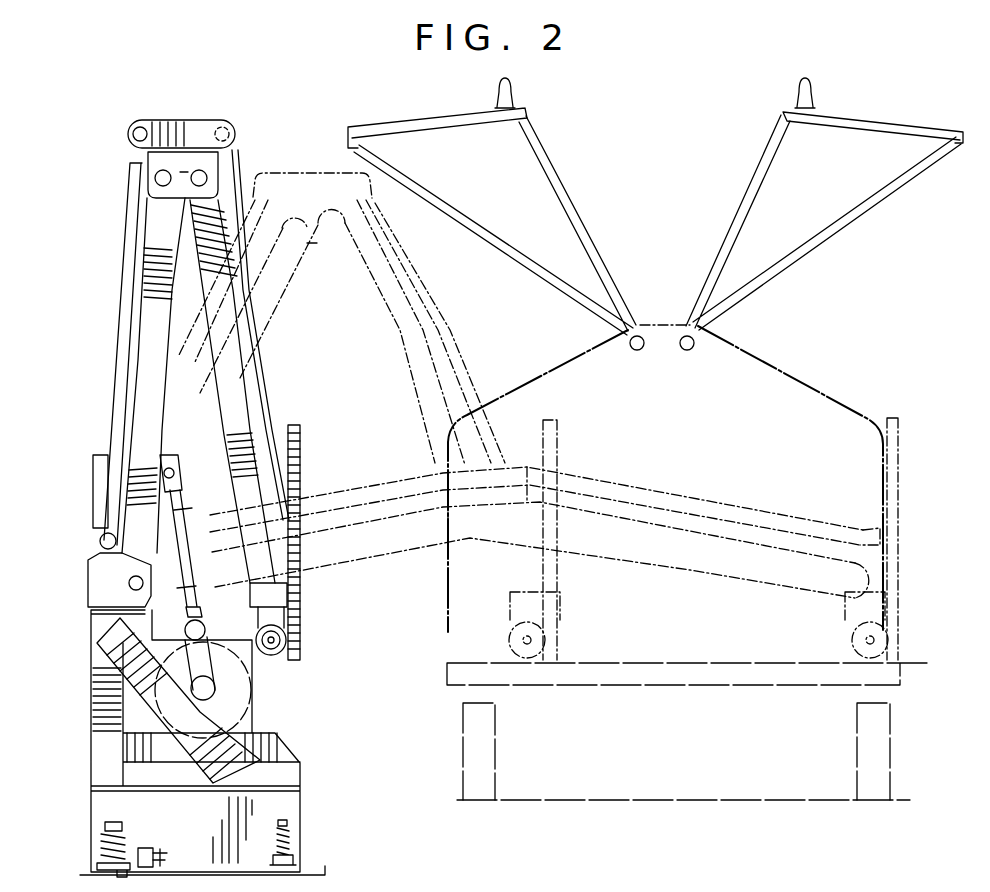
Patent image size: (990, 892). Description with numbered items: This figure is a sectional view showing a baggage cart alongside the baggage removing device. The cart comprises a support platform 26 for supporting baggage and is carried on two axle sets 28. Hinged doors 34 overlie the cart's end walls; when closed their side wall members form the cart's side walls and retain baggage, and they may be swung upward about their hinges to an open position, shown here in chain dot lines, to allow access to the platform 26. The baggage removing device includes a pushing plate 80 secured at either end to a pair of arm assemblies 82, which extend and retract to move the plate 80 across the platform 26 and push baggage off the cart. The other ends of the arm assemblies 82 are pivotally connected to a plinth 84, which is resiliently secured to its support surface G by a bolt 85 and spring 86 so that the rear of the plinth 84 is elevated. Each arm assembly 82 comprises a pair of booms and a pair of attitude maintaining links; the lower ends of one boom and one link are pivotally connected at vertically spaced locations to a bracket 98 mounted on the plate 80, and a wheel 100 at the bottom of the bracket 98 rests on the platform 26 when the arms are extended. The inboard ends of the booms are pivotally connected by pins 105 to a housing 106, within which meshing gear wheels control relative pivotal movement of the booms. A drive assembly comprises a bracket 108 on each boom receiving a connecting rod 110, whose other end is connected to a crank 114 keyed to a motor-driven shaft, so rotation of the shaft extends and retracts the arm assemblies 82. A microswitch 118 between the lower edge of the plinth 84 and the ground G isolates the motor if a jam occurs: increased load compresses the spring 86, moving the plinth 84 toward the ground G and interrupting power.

The support platform 26 is at (905, 688).
The axle sets 28 is at (883, 772).
The doors 34 is at (568, 196).
The pushing plate 80 is at (302, 452).
The arm assemblies 82 is at (117, 262).
The plinth 84 is at (309, 767).
The bolt 85 is at (290, 828).
The spring 86 is at (137, 860).
The bracket 98 is at (281, 592).
The wheel 100 is at (285, 660).
The pins 105 is at (204, 176).
The housing 106 is at (181, 123).
The bracket 108 is at (168, 458).
The connecting rod 110 is at (186, 512).
The crank 114 is at (247, 693).
The microswitch 118 is at (153, 848).
The support surface G is at (323, 874).